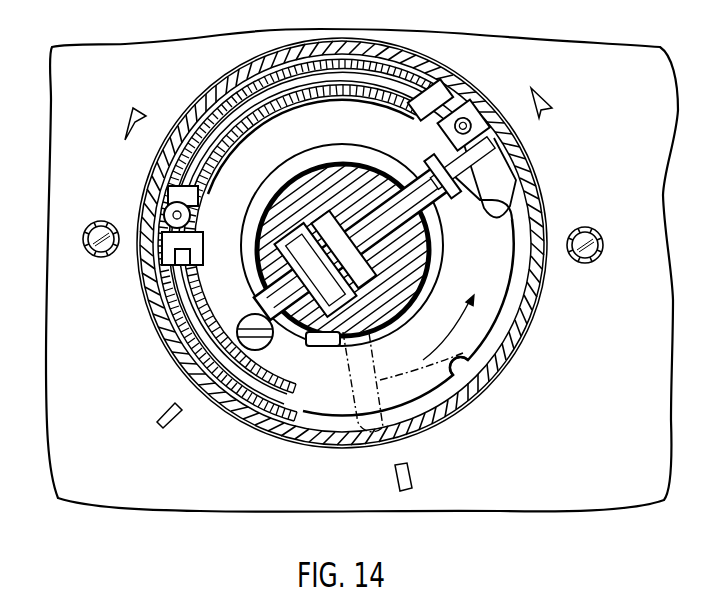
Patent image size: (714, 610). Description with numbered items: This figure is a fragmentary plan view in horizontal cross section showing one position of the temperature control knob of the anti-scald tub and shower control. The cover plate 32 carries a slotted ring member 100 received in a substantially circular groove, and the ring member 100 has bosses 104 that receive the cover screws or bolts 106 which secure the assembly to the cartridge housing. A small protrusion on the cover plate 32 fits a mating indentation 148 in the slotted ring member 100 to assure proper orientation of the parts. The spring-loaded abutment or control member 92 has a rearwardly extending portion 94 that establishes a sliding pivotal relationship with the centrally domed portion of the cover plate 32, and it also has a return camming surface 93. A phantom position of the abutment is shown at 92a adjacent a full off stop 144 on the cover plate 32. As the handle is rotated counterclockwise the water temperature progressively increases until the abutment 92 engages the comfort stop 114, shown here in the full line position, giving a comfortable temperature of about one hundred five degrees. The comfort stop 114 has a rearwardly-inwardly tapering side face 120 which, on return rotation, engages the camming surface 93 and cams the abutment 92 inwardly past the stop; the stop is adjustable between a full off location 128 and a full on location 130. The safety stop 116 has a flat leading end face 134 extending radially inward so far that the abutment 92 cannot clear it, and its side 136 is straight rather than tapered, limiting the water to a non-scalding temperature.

The cover plate 32 is at (637, 418).
The abutment or control member 92 is at (441, 174).
The phantom position of abutment 92a is at (382, 366).
The return camming surface 93 is at (480, 130).
The rearwardly extending portion 94 is at (400, 181).
The slotted ring member 100 is at (516, 263).
The bosses 104 is at (420, 131).
The cover screws or bolts 106 is at (425, 150).
The comfort stop 114 is at (481, 94).
The safety stop 116 is at (150, 231).
The rearwardly-inwardly tapering side face 120 is at (426, 95).
The full off location 128 is at (412, 468).
The full on location 130 is at (170, 410).
The flat leading end face 134 is at (204, 207).
The straight side 136 is at (197, 243).
The full off stop 144 is at (327, 347).
The mating indentation 148 is at (462, 368).